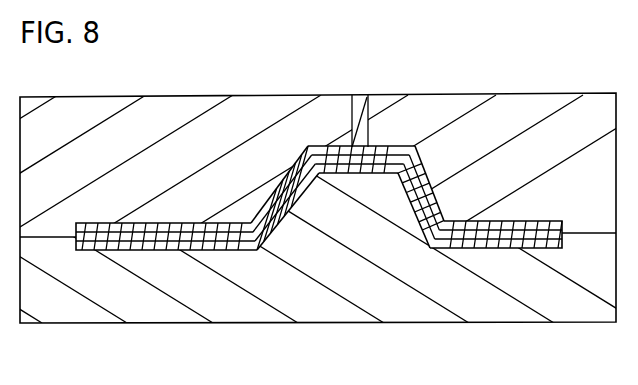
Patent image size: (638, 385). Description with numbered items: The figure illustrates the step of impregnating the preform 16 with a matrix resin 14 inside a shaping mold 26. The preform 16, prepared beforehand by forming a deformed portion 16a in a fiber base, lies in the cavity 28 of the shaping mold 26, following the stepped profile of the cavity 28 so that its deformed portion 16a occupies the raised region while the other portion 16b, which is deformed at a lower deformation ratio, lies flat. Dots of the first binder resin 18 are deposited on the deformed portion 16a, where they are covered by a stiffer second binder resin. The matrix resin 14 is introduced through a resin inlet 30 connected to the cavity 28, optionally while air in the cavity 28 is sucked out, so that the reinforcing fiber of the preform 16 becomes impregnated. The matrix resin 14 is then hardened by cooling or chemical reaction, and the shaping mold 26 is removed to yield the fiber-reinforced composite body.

The matrix resin 14 is at (363, 101).
The preform 16 is at (517, 214).
The deformed portion 16a is at (421, 155).
The other portion 16b is at (535, 220).
The first binder resin 18 is at (436, 204).
The shaping mold 26 is at (598, 92).
The cavity 28 is at (101, 228).
The resin inlet 30 is at (358, 124).